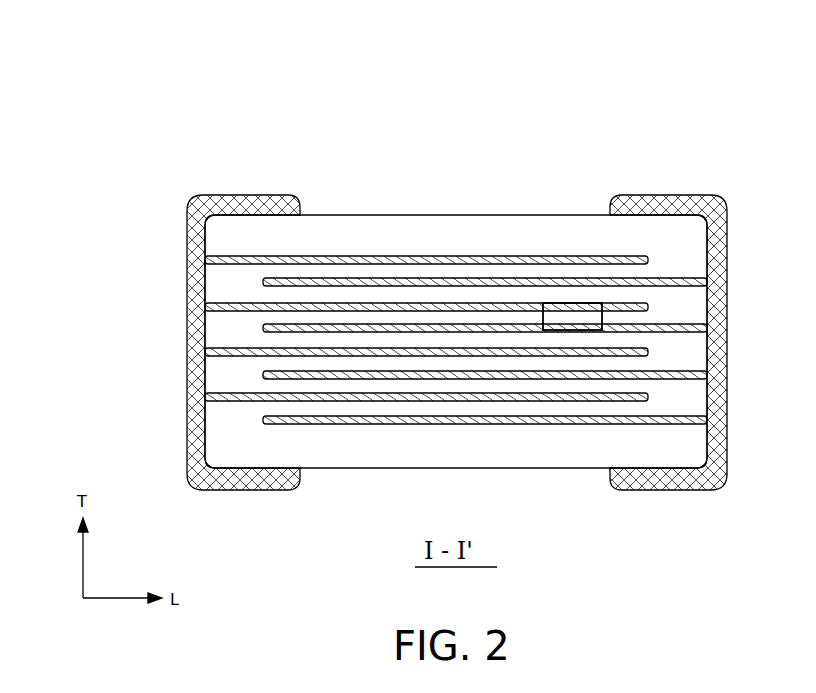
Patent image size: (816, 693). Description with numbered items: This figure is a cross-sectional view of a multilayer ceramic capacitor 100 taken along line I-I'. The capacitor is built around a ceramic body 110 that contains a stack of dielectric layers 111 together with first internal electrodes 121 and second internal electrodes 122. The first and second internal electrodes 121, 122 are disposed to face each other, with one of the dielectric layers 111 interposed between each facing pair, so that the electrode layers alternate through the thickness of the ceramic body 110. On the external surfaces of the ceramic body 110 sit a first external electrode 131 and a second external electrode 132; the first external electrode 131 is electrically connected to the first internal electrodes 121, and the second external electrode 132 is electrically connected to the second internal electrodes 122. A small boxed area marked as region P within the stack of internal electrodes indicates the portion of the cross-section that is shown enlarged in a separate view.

The multilayer ceramic capacitor 100 is at (470, 60).
The ceramic body 110 is at (457, 214).
The dielectric layer 111 is at (213, 272).
The first internal electrode 121 is at (248, 257).
The second internal electrode 122 is at (268, 284).
The first external electrode 131 is at (245, 195).
The second external electrode 132 is at (668, 200).
The region P is at (565, 302).